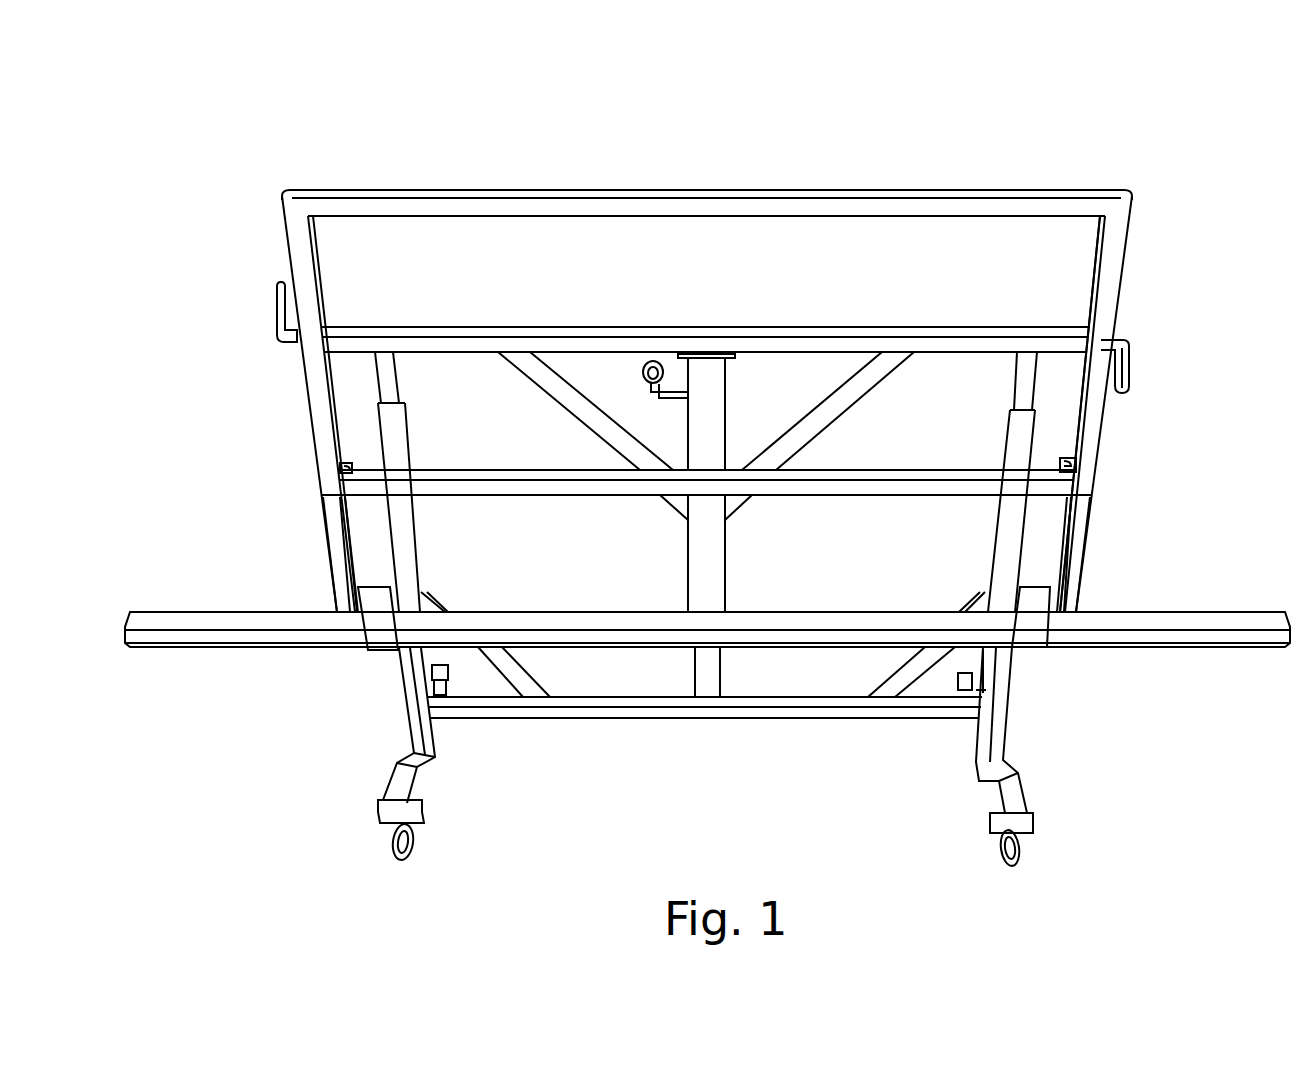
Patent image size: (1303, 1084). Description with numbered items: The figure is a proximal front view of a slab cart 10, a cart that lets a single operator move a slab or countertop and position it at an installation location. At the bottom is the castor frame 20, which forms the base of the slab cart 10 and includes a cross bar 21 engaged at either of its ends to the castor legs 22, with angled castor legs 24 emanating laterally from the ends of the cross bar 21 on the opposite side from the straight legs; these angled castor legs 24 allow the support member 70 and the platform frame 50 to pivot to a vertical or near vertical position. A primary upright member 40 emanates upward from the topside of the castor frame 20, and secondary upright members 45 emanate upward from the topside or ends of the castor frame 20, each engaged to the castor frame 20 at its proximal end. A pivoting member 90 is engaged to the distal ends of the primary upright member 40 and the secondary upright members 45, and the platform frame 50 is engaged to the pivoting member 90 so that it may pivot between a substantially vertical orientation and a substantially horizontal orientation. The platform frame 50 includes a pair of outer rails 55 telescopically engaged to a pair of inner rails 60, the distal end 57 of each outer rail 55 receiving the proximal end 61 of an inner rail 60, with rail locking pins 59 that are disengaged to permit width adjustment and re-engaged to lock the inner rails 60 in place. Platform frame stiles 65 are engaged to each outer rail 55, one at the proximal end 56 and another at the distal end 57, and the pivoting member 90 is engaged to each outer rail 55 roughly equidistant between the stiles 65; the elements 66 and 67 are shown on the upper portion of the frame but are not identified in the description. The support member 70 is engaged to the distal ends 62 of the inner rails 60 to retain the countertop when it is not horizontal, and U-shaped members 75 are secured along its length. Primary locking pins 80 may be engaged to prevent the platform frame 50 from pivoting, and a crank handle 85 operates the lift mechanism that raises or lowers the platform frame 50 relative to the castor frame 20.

The slab cart 10 is at (178, 153).
The castor frame 20 is at (490, 713).
The cross bar 21 is at (603, 713).
The castor legs 22 is at (980, 672).
The angled castor legs 24 is at (398, 790).
The primary upright member 40 is at (722, 418).
The secondary upright members 45 is at (407, 570).
The platform frame 50 is at (745, 207).
The outer rails 55 is at (318, 378).
The proximal end of outer rail 56 is at (292, 225).
The distal end of outer rail 57 is at (320, 440).
The rail locking pins 59 is at (336, 466).
The inner rails 60 is at (340, 567).
The proximal end of inner rail 61 is at (333, 594).
The distal ends of inner rail 62 is at (335, 533).
The platform frame stiles 65 is at (622, 195).
The top rail 66 is at (350, 193).
The top rail end 67 is at (1037, 192).
The support member 70 is at (770, 640).
The U-shaped members 75 is at (385, 632).
The primary locking pins 80 is at (278, 312).
The crank handle 85 is at (657, 395).
The pivoting member 90 is at (617, 330).